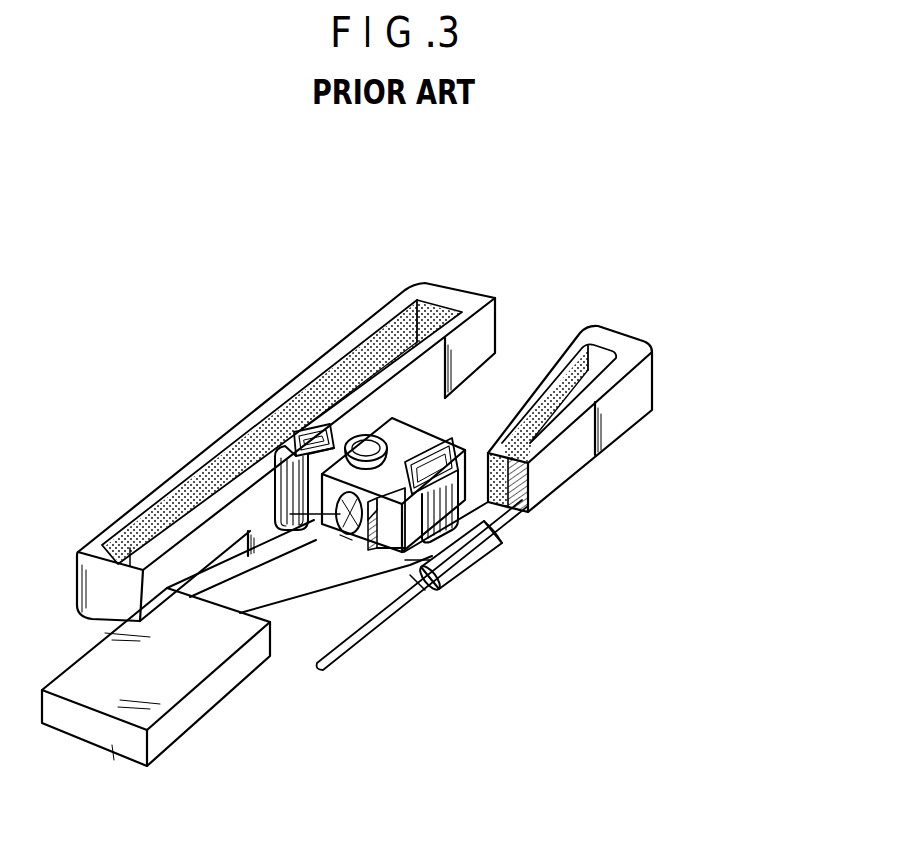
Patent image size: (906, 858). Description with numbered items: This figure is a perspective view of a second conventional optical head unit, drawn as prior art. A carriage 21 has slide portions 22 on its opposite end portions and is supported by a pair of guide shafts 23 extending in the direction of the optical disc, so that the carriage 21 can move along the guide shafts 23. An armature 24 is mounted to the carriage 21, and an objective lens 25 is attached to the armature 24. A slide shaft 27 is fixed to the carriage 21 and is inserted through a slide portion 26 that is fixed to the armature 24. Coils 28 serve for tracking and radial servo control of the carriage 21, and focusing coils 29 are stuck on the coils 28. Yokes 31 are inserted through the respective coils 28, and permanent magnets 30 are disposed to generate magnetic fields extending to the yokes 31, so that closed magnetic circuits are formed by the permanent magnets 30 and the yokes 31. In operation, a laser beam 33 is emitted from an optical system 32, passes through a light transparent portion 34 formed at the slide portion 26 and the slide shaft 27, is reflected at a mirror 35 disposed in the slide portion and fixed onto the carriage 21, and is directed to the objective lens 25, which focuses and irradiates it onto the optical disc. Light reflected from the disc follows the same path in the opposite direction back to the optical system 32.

The carriage 21 is at (400, 568).
The slide portions 22 is at (470, 562).
The guide shafts 23 is at (330, 668).
The armature 24 is at (415, 450).
The objective lens 25 is at (356, 446).
The slide portion 26 is at (325, 492).
The slide shaft 27 is at (343, 512).
The coils 28 is at (425, 568).
The focusing coils 29 is at (508, 472).
The permanent magnets 30 is at (393, 332).
The yokes 31 is at (458, 295).
The optical system 32 is at (135, 713).
The laser beam 33 is at (240, 550).
The light transparent portion 34 is at (290, 514).
The mirror 35 is at (340, 536).